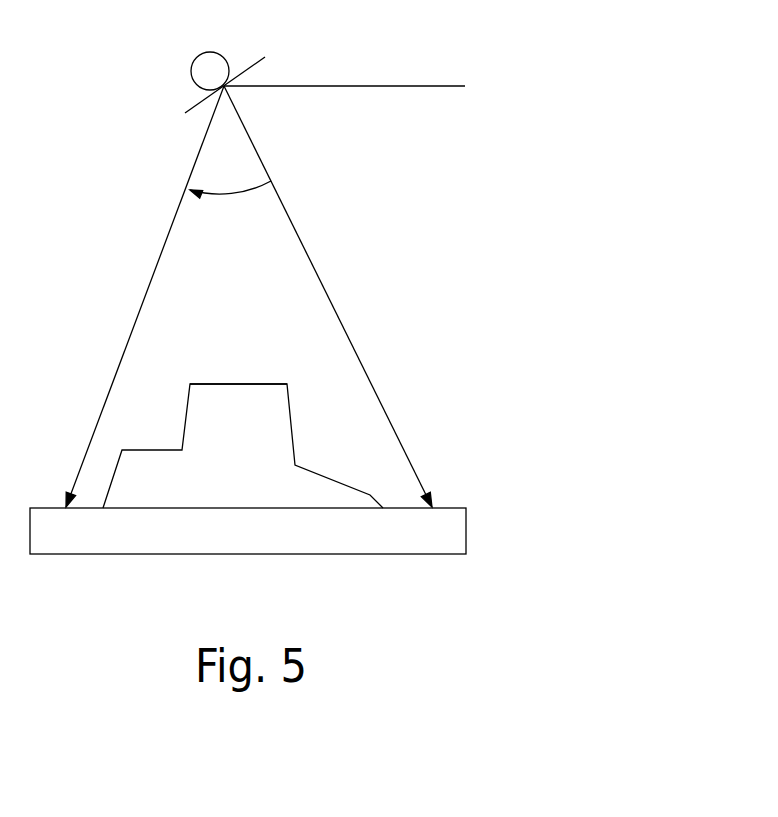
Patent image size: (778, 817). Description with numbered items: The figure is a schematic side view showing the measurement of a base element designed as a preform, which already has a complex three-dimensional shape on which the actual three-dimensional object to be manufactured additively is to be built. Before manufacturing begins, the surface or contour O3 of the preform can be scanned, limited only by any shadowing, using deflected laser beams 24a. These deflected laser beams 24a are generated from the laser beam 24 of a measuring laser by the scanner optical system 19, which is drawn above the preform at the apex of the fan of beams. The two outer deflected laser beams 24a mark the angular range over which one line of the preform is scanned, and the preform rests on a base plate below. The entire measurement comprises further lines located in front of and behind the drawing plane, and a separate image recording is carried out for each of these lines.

The scanner optical system 19 is at (247, 67).
The laser beam 24 is at (363, 85).
The deflected laser beams 24a is at (152, 278).
The surface of the base element O3 is at (240, 383).